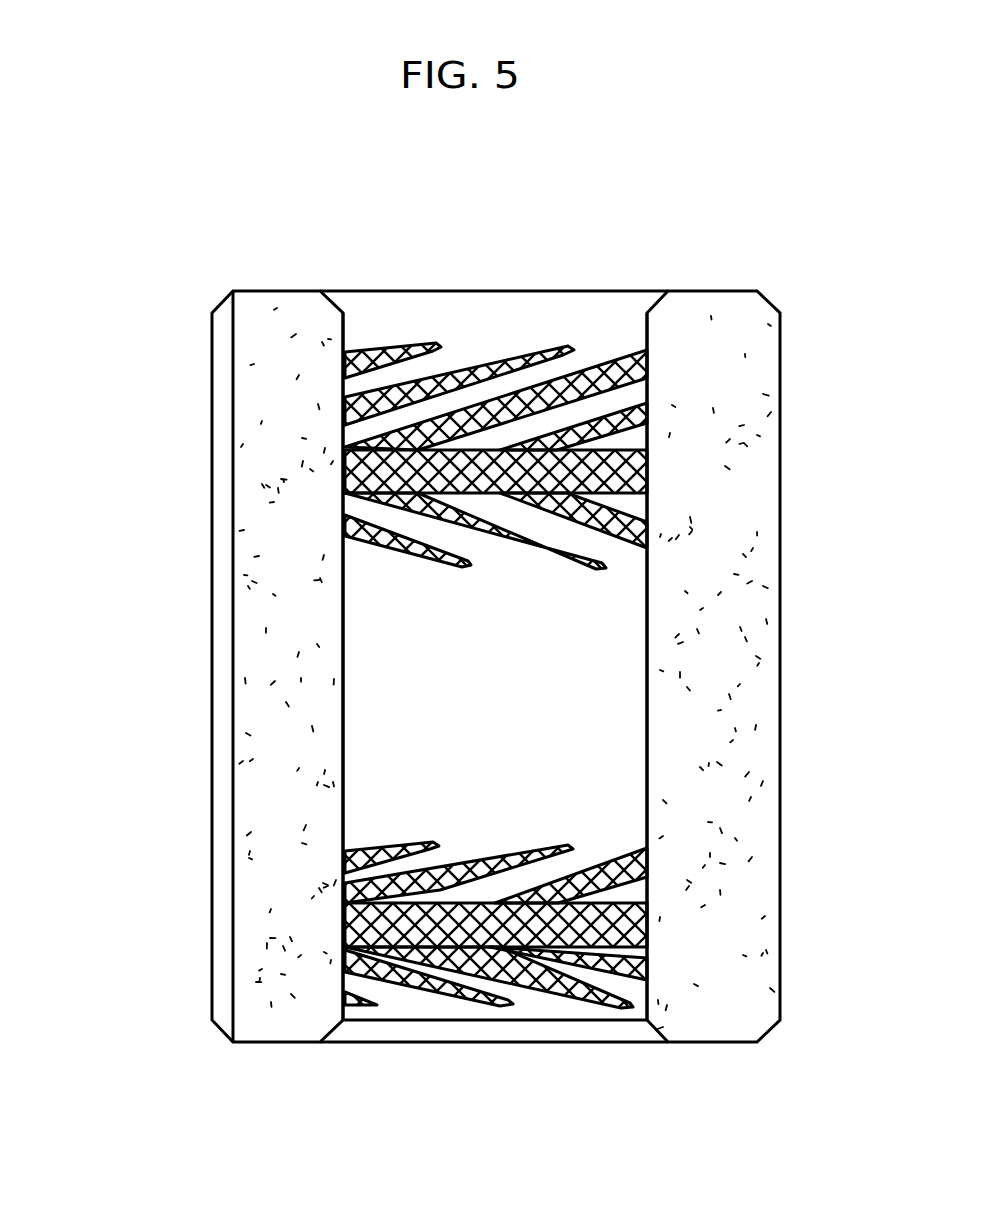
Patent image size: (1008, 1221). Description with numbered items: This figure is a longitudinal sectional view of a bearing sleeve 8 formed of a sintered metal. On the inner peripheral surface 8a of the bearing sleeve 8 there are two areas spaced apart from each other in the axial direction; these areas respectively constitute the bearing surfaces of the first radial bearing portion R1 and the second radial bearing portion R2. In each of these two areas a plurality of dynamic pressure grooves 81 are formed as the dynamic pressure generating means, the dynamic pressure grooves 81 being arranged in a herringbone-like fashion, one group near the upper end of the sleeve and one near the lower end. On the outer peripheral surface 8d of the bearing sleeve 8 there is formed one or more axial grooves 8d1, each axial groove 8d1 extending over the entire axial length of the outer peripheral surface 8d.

The bearing sleeve 8 is at (161, 314).
The inner peripheral surface 8a is at (646, 672).
The outer peripheral surface 8d is at (212, 618).
The axial groove 8d1 is at (233, 700).
The dynamic pressure groove 81 is at (424, 363).
The first radial bearing portion R1 is at (343, 440).
The second radial bearing portion R2 is at (343, 931).